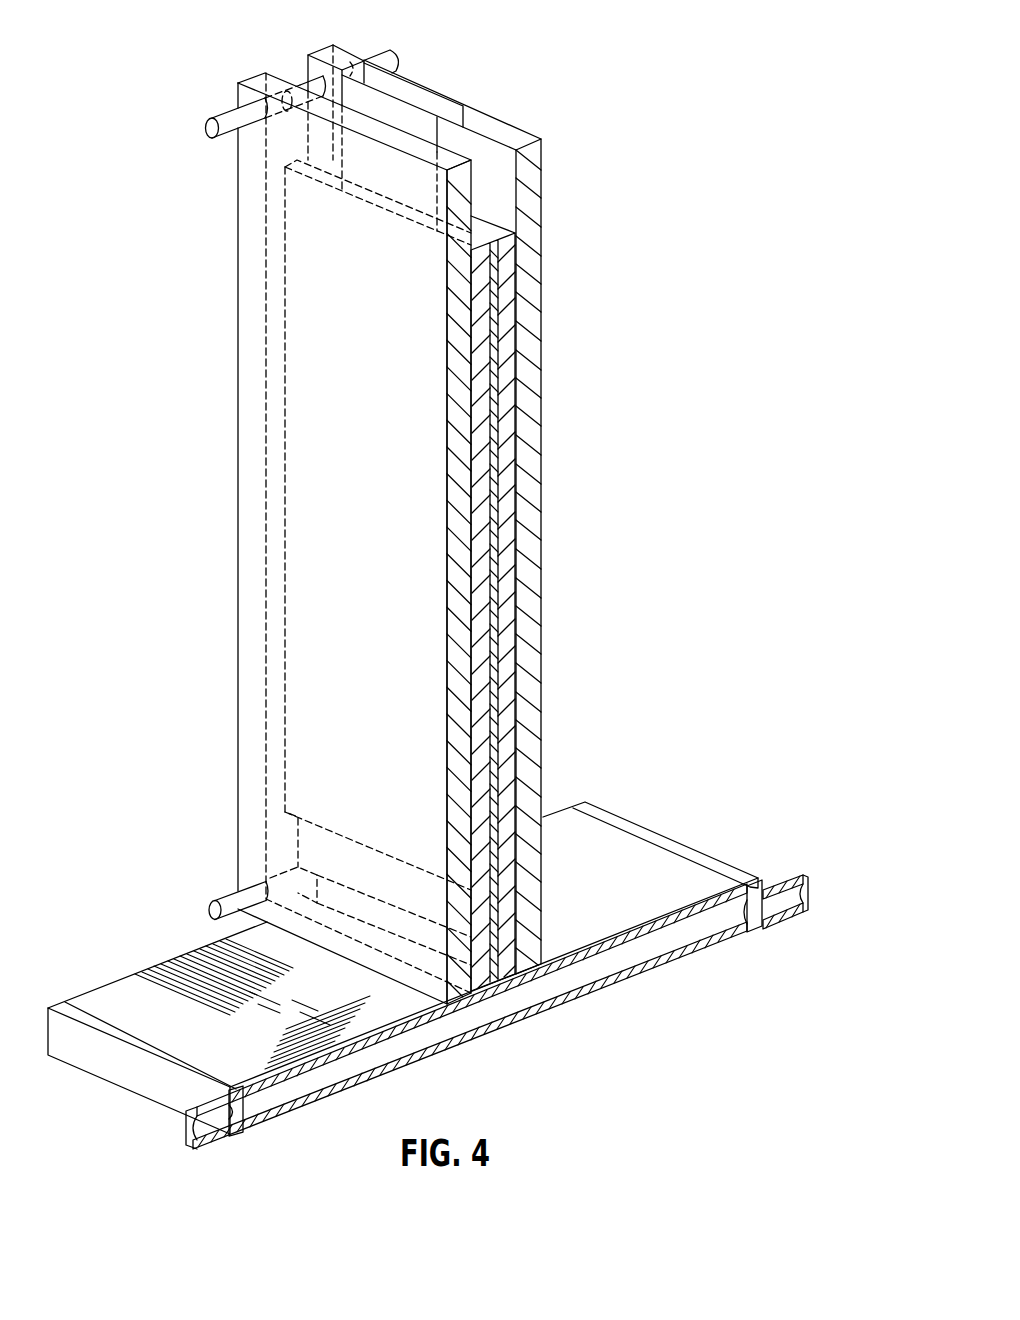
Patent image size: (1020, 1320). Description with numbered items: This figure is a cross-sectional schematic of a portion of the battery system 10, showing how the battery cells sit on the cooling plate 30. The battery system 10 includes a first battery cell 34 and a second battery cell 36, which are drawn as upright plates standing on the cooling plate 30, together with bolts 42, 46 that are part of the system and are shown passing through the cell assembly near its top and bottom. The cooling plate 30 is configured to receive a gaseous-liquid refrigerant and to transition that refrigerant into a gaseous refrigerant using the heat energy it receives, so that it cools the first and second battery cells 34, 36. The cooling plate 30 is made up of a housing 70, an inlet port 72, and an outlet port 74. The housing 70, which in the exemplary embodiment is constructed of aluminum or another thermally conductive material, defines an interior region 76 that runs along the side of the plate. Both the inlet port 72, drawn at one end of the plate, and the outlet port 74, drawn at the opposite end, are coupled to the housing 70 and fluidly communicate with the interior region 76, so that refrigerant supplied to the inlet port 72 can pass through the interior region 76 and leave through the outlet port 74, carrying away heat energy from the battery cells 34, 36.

The battery system 10 is at (693, 285).
The cooling plate 30 is at (108, 993).
The first battery cell 34 is at (315, 565).
The second battery cell 36 is at (522, 538).
The bolt 42 is at (225, 134).
The bolt 46 is at (224, 893).
The housing 70 is at (632, 848).
The inlet port 72 is at (186, 1126).
The outlet port 74 is at (791, 880).
The interior region 76 is at (640, 957).